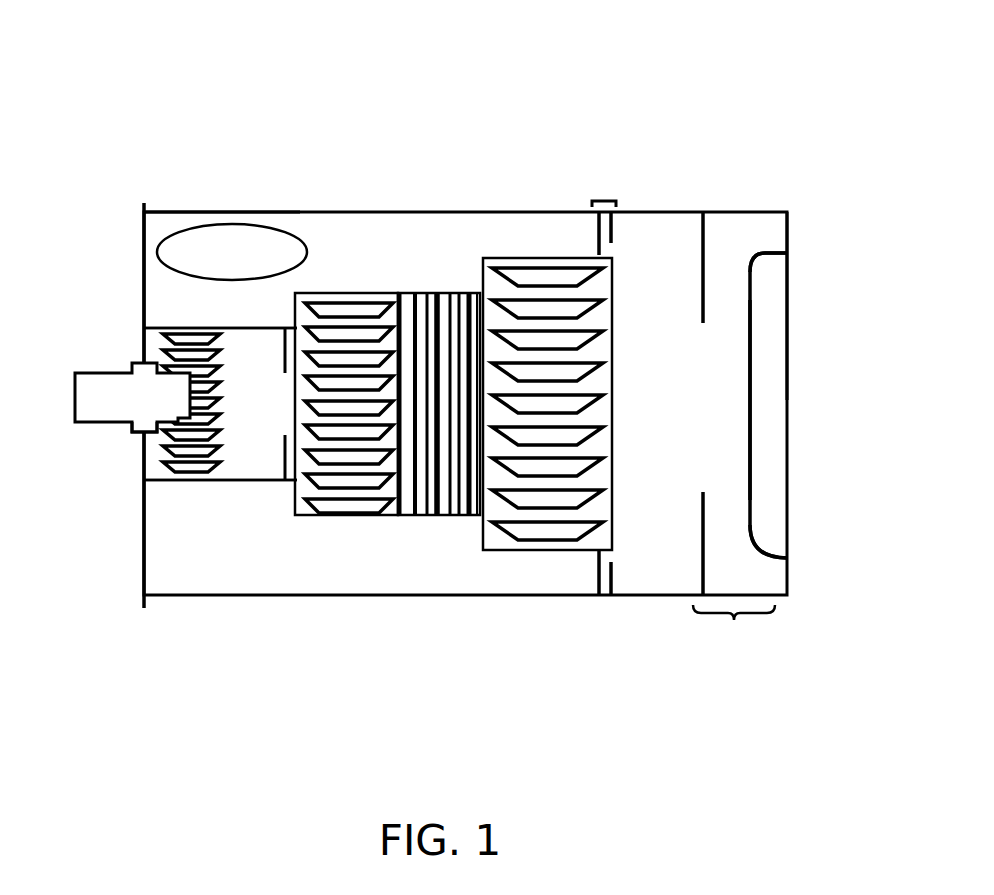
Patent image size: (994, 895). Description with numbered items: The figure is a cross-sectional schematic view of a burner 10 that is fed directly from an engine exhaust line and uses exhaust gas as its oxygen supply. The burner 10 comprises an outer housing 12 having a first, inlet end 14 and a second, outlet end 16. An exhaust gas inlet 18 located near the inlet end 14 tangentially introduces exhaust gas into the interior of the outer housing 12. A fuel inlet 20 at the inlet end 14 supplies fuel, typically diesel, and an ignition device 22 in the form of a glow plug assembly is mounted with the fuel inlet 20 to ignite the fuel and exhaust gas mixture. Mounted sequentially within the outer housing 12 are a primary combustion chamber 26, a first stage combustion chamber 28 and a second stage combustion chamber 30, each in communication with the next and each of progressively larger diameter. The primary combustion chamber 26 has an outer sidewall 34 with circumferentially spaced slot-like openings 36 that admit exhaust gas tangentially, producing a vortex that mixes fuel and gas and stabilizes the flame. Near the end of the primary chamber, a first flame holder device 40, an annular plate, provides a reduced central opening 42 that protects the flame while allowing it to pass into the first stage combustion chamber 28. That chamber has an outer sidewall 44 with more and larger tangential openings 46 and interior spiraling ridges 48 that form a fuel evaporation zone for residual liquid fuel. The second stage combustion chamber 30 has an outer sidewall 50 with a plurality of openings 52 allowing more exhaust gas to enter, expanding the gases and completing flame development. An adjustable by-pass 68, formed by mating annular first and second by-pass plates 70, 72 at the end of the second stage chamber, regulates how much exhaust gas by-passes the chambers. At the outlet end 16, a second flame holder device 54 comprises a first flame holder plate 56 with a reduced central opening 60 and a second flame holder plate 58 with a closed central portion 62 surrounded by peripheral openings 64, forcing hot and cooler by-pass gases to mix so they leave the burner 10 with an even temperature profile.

The burner 10 is at (222, 100).
The outer housing 12 is at (386, 597).
The first (inlet) end 14 is at (166, 212).
The second (outlet) end 16 is at (787, 215).
The exhaust gas inlet 18 is at (289, 216).
The fuel inlet 20 is at (75, 393).
The ignition device 22 is at (130, 428).
The primary combustion chamber 26 is at (215, 481).
The first stage combustion chamber 28 is at (382, 517).
The second stage combustion chamber 30 is at (527, 552).
The outer sidewall 34 is at (195, 328).
The openings 36 is at (170, 338).
The first flame holder device 40 is at (282, 455).
The reduced central opening 42 is at (285, 370).
The outer sidewall 44 is at (393, 294).
The openings 46 is at (346, 310).
The spiraling ridges 48 is at (430, 515).
The outer sidewall 50 is at (533, 258).
The openings 52 is at (527, 278).
The second flame holder device 54 is at (734, 635).
The first flame holder plate 56 is at (703, 537).
The second flame holder plate 58 is at (753, 292).
The central opening 60 is at (703, 322).
The closed central portion 62 is at (748, 378).
The openings 64 is at (760, 257).
The adjustable by-pass 68 is at (606, 198).
The first by-pass plate 70 is at (598, 568).
The second by-pass plate 72 is at (613, 577).